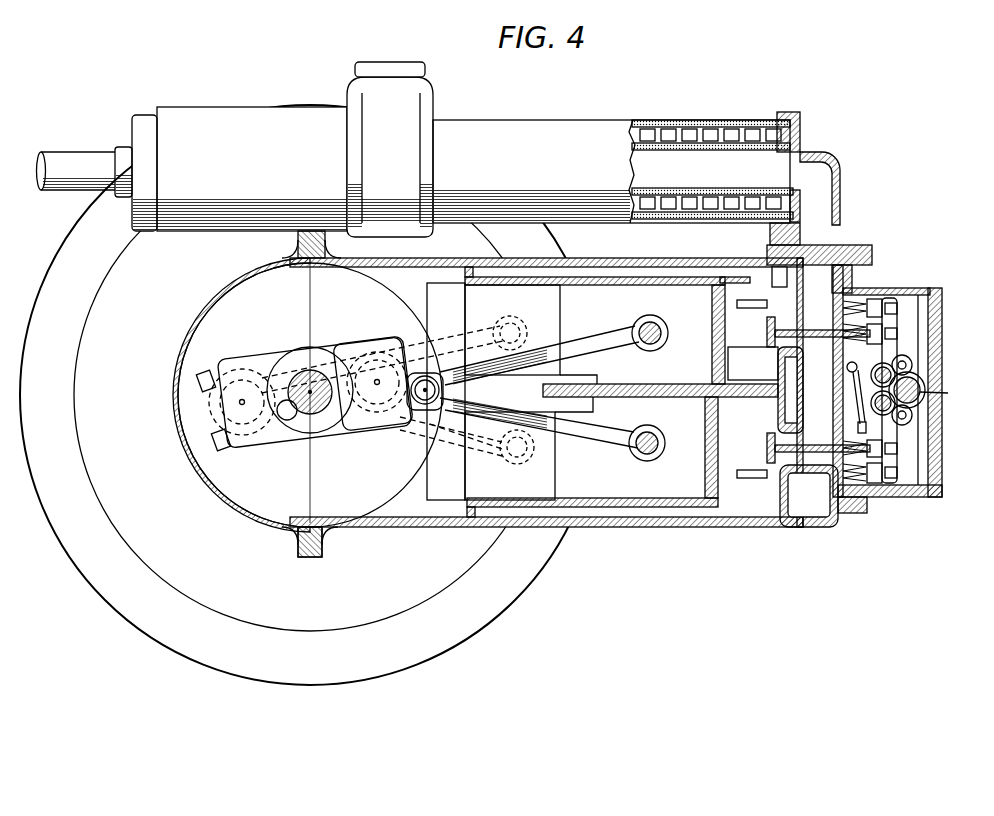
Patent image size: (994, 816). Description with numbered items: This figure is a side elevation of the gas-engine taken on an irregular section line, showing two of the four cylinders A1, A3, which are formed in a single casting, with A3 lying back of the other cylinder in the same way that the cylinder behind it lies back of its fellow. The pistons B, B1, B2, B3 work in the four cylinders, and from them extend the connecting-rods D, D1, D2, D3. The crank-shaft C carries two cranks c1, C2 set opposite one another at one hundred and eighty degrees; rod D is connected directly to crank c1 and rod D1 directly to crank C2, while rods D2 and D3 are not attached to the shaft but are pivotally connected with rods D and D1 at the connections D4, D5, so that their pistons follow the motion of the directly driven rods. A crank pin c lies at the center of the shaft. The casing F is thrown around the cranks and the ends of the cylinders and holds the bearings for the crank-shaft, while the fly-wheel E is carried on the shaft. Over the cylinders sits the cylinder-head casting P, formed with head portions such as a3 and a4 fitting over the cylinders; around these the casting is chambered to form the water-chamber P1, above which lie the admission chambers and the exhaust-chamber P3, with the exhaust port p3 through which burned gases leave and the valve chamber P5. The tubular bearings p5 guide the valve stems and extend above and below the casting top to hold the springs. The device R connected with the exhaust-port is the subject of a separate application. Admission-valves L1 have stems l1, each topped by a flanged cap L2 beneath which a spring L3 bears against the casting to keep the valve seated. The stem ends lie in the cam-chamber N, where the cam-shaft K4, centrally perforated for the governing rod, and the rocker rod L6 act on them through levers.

The driving wheel E is at (310, 395).
The casing F is at (173, 373).
The device connected with the exhaust-port R is at (419, 149).
The cylinder-head casting P is at (769, 528).
The water-chamber P1 is at (773, 272).
The exhaust-chamber P3 is at (819, 406).
The exhaust port p3 is at (819, 209).
The valve chamber P5 is at (753, 385).
The tubular bearing for valve stem p5 is at (820, 390).
The piston B is at (446, 391).
The cylinder A1 is at (531, 331).
The cylinder A3 is at (533, 484).
The piston B1 is at (708, 308).
The piston B3 is at (708, 452).
The piston B2 is at (438, 494).
The connecting-rod D is at (415, 348).
The connecting-rod D1 is at (607, 312).
The connecting-rod D2 is at (413, 442).
The connecting-rod D3 is at (577, 433).
The connection D4 is at (258, 440).
The connection D5 is at (426, 404).
The crank-shaft C is at (312, 414).
The crank c1 is at (204, 396).
The crank C2 is at (383, 404).
The crank pin c is at (242, 405).
The cam-chamber N is at (887, 396).
The admission-valve L1 is at (804, 391).
The flanged cap L2 is at (880, 293).
The spring L3 is at (863, 290).
The rocker rod L6 is at (920, 400).
The admission-valve stem l1 is at (818, 348).
The upper valve a4 is at (752, 333).
The head portion a3 is at (752, 452).
The cam-shaft K4 is at (913, 388).